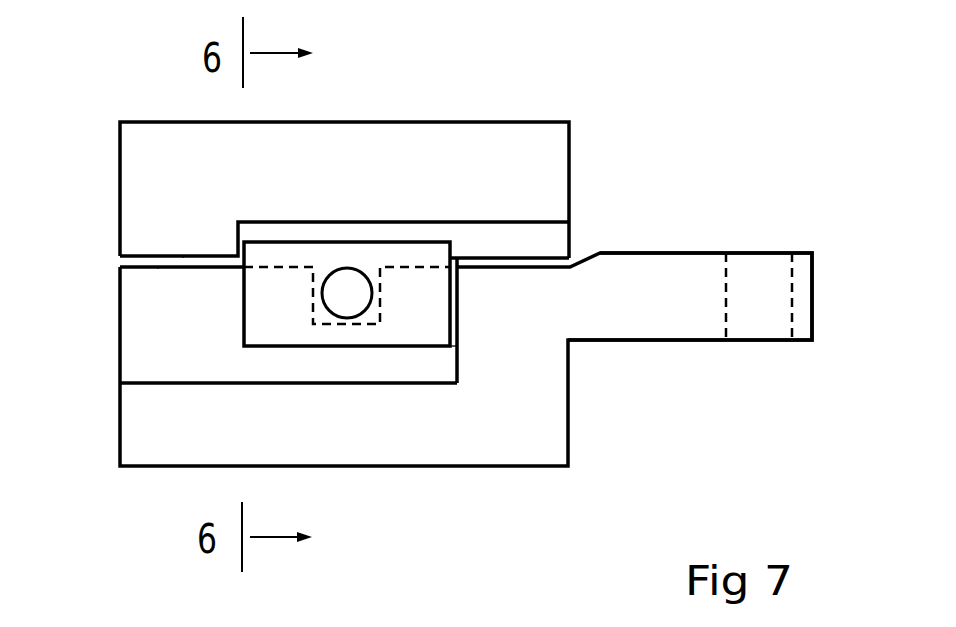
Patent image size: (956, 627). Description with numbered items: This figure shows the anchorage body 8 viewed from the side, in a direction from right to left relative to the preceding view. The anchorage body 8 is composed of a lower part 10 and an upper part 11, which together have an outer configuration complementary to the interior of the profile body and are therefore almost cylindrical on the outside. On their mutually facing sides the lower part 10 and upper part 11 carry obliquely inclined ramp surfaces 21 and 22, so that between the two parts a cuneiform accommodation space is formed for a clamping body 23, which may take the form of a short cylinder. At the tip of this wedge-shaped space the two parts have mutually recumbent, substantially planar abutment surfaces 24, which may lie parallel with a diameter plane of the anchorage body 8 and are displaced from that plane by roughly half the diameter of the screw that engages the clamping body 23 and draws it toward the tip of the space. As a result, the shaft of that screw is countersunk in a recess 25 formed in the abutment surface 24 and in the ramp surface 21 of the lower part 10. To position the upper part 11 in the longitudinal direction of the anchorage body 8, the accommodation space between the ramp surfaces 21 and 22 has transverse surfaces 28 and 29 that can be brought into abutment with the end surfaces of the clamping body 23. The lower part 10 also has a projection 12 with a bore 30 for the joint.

The anchorage body 8 is at (758, 133).
The lower part 10 is at (535, 452).
The upper part 11 is at (513, 148).
The projection 12 is at (681, 324).
The ramp surface 21 is at (153, 348).
The ramp surface 22 is at (547, 239).
The clamping body 23 is at (417, 322).
The abutment surfaces 24 is at (478, 257).
The recess 25 is at (347, 318).
The transverse surface 28 is at (457, 360).
The transverse surface 29 is at (238, 240).
The bore 30 is at (760, 270).